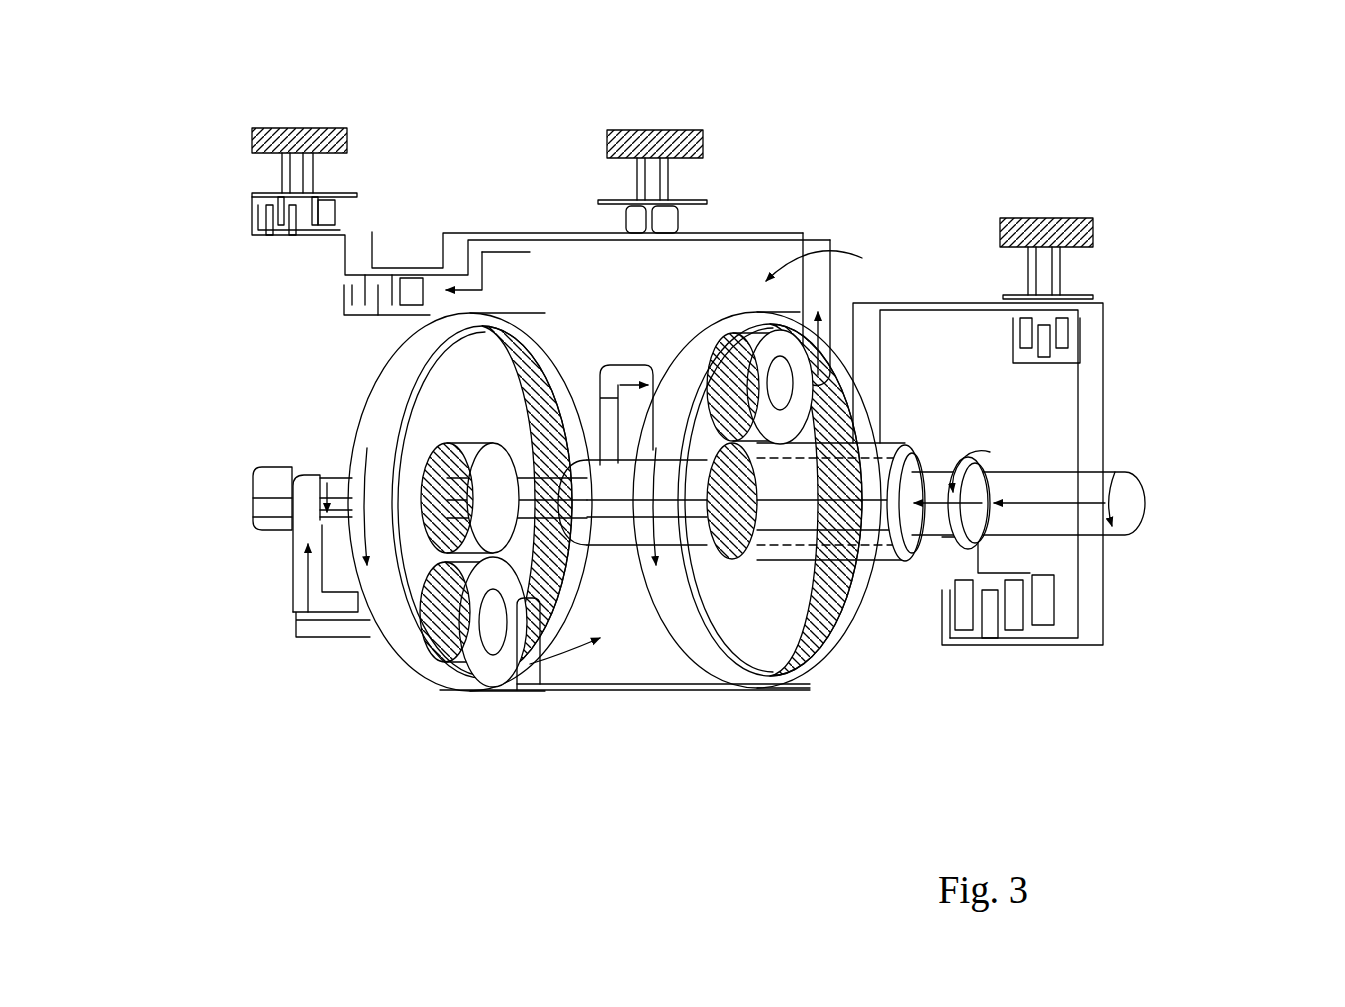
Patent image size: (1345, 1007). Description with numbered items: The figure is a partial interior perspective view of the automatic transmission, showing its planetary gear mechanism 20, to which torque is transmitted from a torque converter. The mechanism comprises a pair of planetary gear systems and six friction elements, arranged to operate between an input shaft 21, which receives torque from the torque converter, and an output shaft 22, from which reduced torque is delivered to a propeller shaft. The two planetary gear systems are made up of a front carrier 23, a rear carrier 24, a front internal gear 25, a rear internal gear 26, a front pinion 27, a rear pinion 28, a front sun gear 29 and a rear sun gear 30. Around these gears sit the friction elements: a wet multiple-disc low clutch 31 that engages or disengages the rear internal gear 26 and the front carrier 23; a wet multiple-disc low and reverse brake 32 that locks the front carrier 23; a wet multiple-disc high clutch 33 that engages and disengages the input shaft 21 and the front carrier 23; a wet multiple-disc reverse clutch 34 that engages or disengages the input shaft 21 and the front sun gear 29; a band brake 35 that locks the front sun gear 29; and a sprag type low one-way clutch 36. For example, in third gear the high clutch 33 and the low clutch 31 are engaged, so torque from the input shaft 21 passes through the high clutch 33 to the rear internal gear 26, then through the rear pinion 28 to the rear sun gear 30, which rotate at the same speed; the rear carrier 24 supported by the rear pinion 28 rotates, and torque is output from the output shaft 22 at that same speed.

The planetary gear mechanism 20 is at (1010, 148).
The input shaft 21 is at (1138, 505).
The output shaft 22 is at (263, 484).
The front carrier 23 is at (855, 266).
The rear carrier 24 is at (533, 674).
The front internal gear 25 is at (716, 664).
The rear internal gear 26 is at (405, 660).
The front pinion 27 is at (781, 322).
The rear pinion 28 is at (485, 660).
The front sun gear 29 is at (740, 556).
The rear sun gear 30 is at (440, 490).
The low clutch 31 is at (344, 297).
The low & reverse brake 32 is at (357, 194).
The high clutch 33 is at (992, 645).
The reverse clutch 34 is at (1063, 333).
The band brake 35 is at (1058, 275).
The low one-way clutch 36 is at (682, 214).